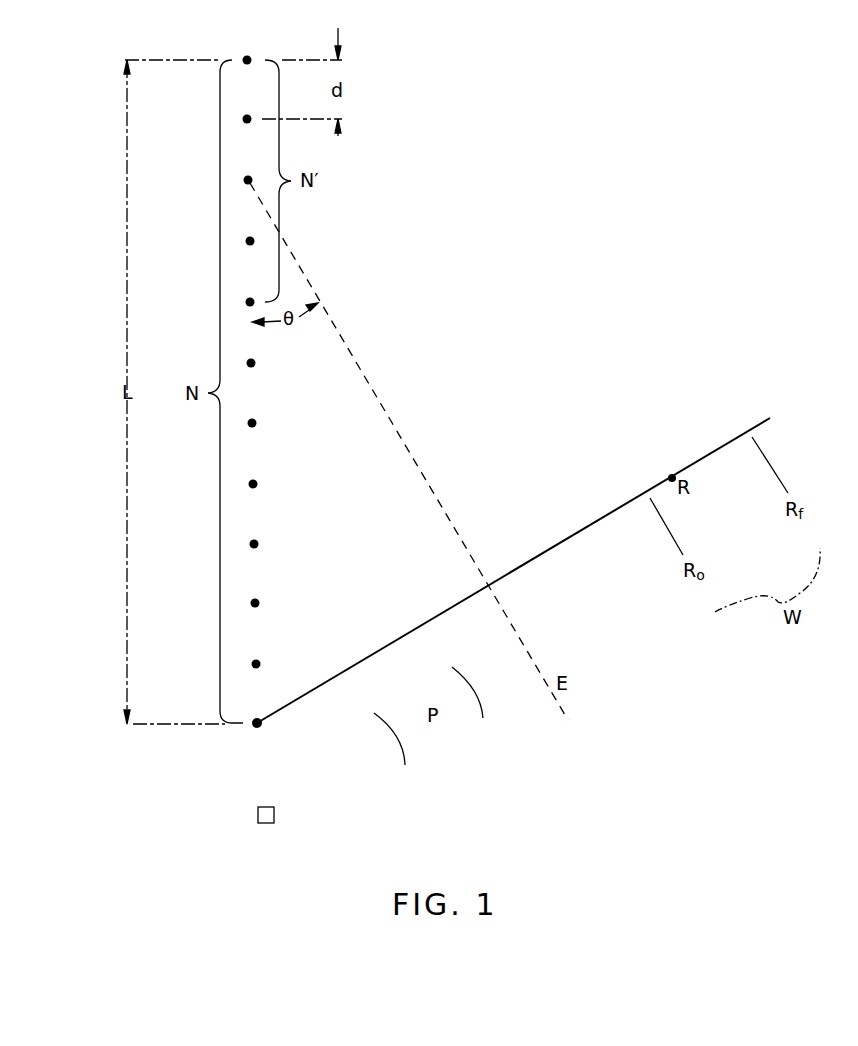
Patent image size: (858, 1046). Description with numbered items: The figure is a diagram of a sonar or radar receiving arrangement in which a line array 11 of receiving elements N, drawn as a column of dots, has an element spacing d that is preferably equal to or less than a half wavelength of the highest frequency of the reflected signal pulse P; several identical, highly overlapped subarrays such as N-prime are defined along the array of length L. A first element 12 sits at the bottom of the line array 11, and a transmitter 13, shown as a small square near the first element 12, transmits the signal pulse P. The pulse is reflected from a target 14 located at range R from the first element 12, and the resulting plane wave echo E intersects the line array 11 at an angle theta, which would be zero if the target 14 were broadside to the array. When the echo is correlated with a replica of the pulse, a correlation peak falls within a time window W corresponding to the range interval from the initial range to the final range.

The line array 11 is at (398, 143).
The first element 12 is at (255, 728).
The transmitter 13 is at (256, 820).
The target 14 is at (670, 476).